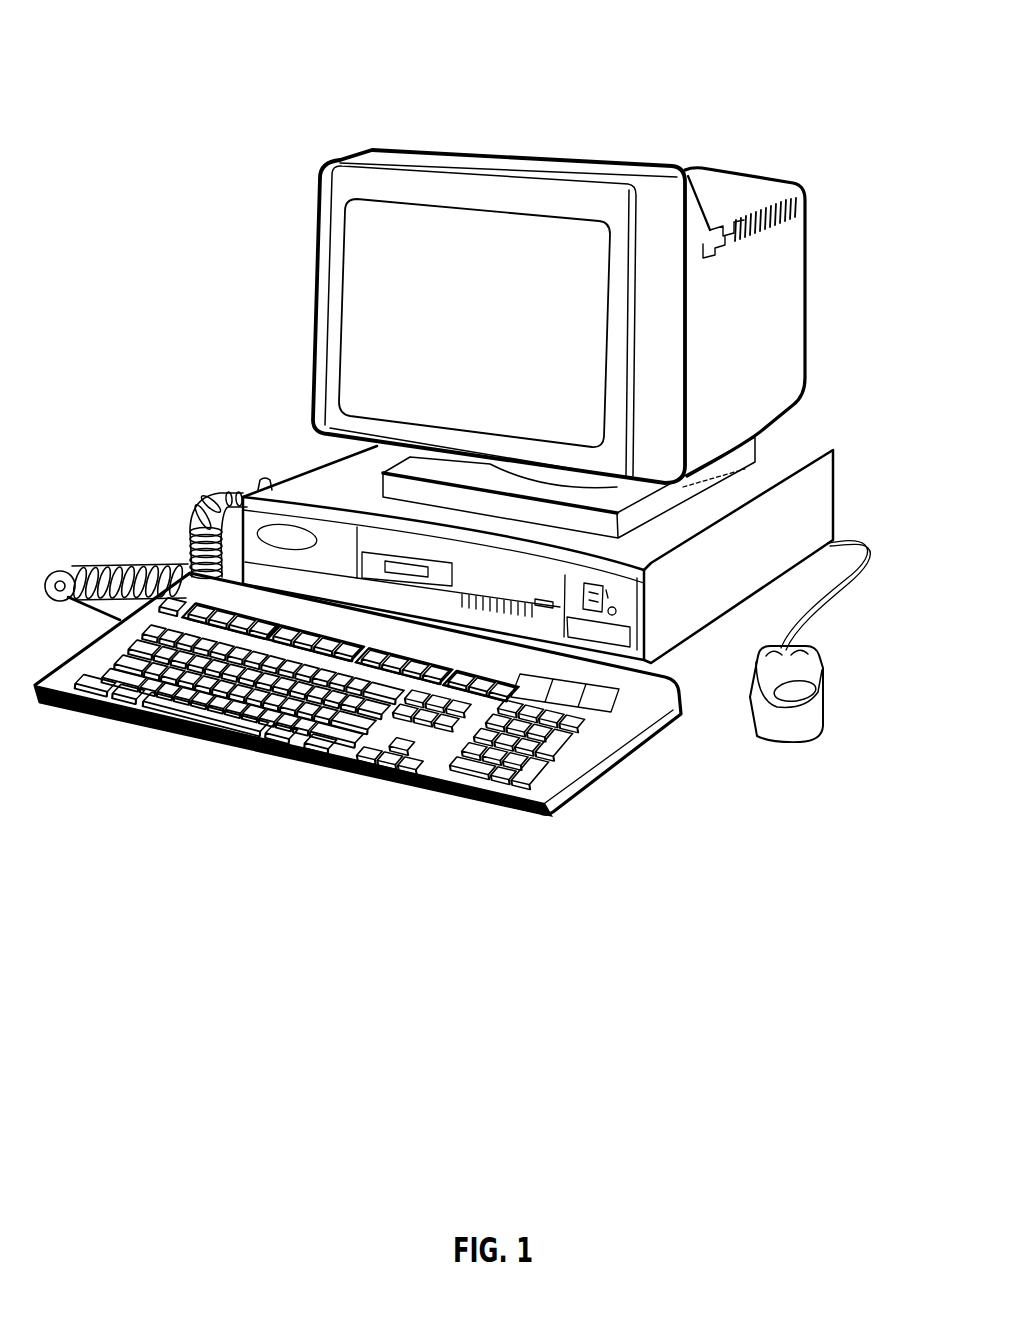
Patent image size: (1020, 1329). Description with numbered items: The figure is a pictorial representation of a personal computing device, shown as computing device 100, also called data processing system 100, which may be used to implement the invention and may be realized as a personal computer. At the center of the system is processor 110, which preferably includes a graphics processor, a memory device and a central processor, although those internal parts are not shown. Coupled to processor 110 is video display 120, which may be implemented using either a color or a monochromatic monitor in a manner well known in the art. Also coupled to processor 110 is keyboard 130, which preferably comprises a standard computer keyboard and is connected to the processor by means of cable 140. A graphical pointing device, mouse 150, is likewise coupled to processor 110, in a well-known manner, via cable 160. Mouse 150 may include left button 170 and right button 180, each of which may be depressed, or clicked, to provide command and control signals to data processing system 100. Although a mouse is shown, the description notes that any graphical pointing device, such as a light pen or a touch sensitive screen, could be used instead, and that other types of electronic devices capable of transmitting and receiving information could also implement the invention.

The computing device 100 is at (676, 122).
The processor 110 is at (820, 492).
The video display 120 is at (316, 377).
The keyboard 130 is at (352, 770).
The cable 140 is at (203, 507).
The mouse 150 is at (807, 727).
The cable 160 is at (840, 597).
The left button 170 is at (754, 672).
The right button 180 is at (813, 663).